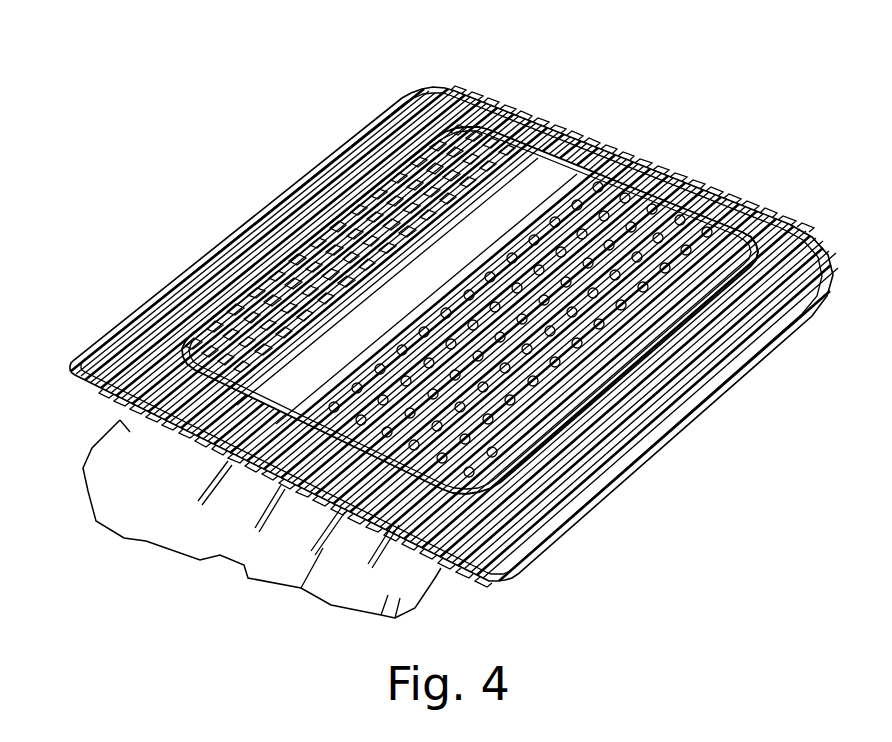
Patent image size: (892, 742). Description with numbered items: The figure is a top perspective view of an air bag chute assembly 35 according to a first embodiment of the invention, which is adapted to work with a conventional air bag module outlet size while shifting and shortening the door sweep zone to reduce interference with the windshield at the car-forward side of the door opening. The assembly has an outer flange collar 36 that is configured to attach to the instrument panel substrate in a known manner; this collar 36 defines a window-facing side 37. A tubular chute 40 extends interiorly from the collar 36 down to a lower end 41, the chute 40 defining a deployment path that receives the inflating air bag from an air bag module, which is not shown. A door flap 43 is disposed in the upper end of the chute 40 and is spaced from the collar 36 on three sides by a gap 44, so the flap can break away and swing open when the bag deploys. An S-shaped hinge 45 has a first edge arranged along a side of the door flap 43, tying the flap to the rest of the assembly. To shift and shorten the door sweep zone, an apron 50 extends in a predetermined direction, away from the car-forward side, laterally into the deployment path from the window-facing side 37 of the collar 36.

The chute assembly 35 is at (437, 311).
The outer flange collar 36 is at (806, 247).
The window-facing side 37 is at (104, 318).
The tubular chute 40 is at (262, 531).
The lower end 41 is at (310, 587).
The door flap 43 is at (619, 210).
The gap 44 is at (717, 237).
The S-shaped hinge 45 is at (471, 195).
The apron 50 is at (316, 247).